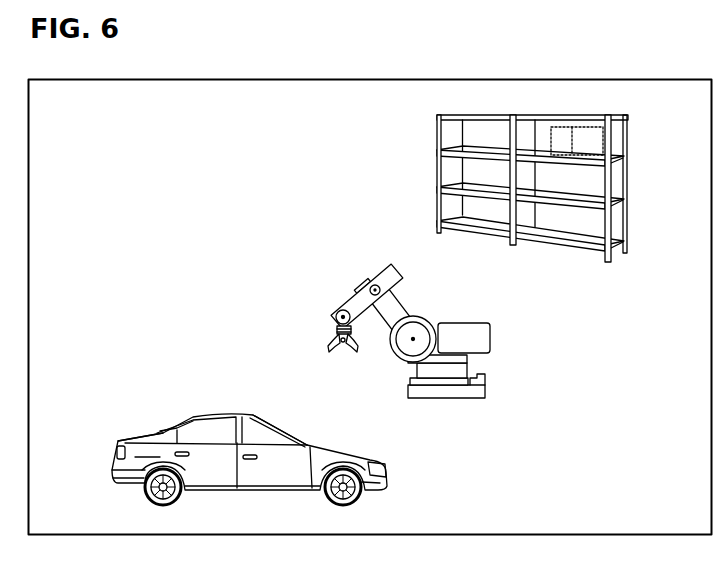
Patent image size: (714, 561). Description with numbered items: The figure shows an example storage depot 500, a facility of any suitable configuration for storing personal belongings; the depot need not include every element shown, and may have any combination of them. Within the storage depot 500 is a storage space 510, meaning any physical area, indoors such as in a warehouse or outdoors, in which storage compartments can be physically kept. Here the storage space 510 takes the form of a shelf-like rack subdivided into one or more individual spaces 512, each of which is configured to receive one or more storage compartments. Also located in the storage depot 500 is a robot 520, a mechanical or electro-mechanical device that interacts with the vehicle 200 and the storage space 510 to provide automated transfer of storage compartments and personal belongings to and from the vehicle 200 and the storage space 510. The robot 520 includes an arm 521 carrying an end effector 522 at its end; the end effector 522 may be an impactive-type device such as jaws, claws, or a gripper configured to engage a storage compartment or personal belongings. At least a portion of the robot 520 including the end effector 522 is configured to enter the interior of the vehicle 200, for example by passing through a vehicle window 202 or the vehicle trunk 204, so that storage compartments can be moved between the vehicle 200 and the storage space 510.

The storage depot 500 is at (370, 307).
The storage space 510 is at (557, 247).
The individual space 512 is at (588, 139).
The robot 520 is at (458, 323).
The arm 521 is at (392, 267).
The end effector 522 is at (335, 317).
The vehicle 200 is at (165, 433).
The vehicle window 202 is at (272, 433).
The vehicle trunk 204 is at (125, 433).